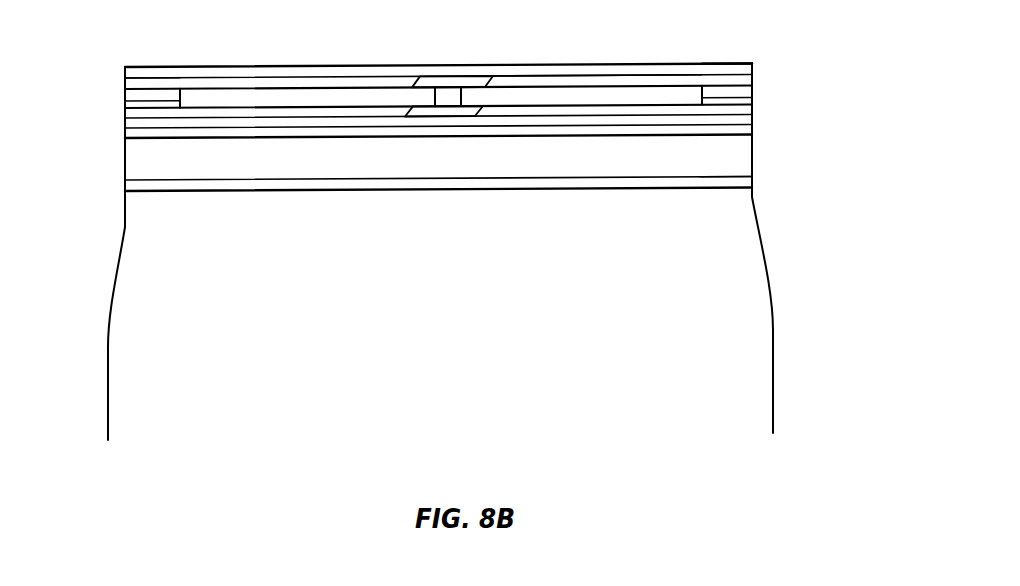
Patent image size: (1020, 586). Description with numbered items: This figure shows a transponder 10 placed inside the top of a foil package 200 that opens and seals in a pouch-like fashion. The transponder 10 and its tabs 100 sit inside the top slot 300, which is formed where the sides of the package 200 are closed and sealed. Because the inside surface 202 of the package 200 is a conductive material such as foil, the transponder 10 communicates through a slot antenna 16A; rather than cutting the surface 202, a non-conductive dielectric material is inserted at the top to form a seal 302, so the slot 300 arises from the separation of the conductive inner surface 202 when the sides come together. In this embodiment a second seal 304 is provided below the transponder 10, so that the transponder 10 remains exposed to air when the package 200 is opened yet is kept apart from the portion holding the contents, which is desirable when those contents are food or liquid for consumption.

The transponder 10 is at (435, 97).
The tabs 100 is at (453, 80).
The slot antenna 16A is at (714, 99).
The package 200 is at (796, 295).
The inside surface 202 is at (722, 73).
The slot 300 is at (583, 88).
The seal 302 is at (153, 100).
The second seal 304 is at (738, 182).